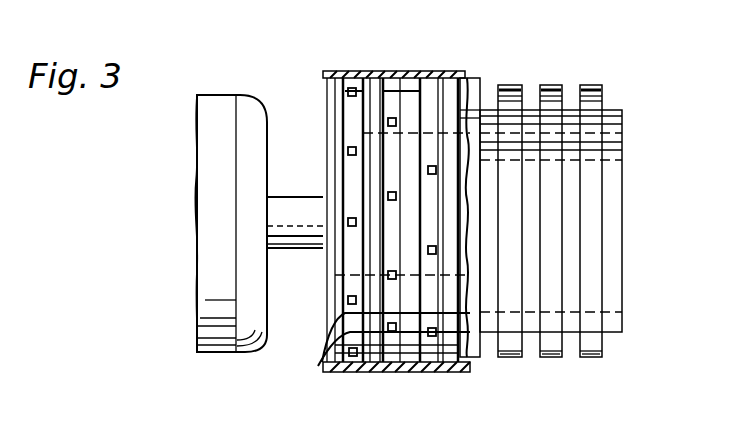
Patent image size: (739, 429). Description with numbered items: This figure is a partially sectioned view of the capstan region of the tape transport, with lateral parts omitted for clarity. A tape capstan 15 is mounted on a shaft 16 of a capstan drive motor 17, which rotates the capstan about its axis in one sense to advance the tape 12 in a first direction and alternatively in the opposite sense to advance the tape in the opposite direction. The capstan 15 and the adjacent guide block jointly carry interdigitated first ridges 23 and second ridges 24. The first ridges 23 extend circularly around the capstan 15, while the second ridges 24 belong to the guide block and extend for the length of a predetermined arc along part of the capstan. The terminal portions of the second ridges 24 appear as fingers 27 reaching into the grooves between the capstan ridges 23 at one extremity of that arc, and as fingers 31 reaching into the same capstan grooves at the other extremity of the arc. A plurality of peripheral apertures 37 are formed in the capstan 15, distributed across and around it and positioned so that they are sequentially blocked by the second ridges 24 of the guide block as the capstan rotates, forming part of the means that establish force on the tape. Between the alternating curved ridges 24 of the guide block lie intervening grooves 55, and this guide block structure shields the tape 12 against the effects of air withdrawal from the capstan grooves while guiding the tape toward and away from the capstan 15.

The tape 12 is at (372, 100).
The tape capstan 15 is at (315, 116).
The shaft 16 is at (310, 252).
The capstan drive motor 17 is at (232, 98).
The first ridges 23 is at (375, 100).
The second ridges 24 is at (498, 100).
The fingers 27 is at (587, 86).
The fingers 31 is at (515, 358).
The peripheral apertures 37 is at (322, 352).
The grooves 55 is at (533, 215).